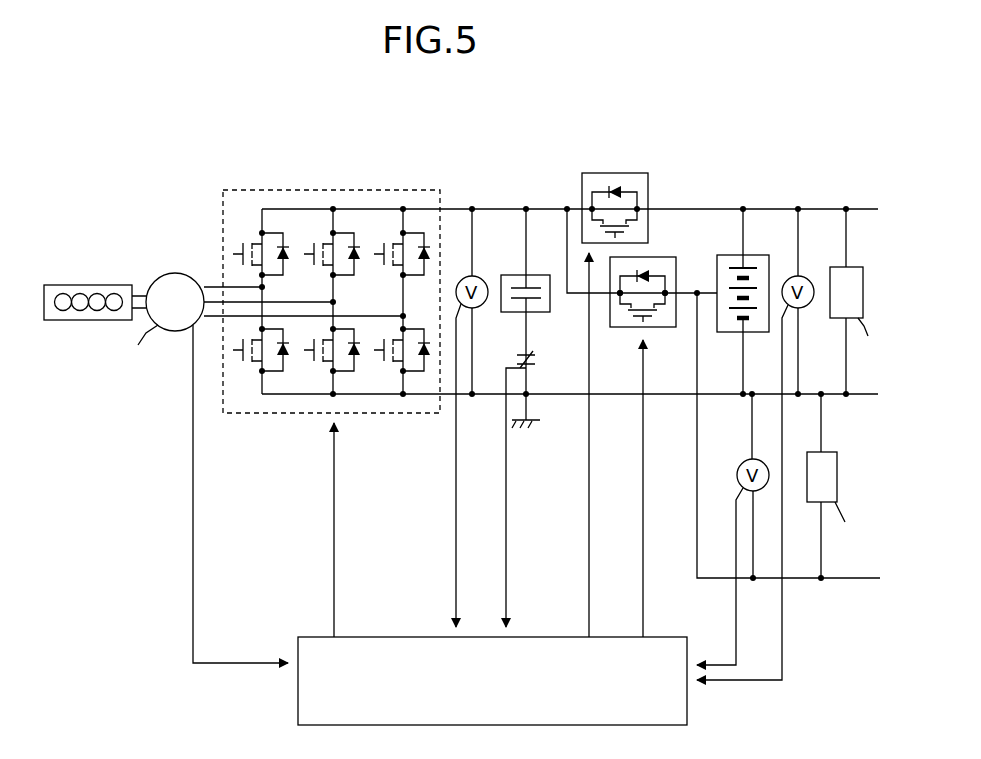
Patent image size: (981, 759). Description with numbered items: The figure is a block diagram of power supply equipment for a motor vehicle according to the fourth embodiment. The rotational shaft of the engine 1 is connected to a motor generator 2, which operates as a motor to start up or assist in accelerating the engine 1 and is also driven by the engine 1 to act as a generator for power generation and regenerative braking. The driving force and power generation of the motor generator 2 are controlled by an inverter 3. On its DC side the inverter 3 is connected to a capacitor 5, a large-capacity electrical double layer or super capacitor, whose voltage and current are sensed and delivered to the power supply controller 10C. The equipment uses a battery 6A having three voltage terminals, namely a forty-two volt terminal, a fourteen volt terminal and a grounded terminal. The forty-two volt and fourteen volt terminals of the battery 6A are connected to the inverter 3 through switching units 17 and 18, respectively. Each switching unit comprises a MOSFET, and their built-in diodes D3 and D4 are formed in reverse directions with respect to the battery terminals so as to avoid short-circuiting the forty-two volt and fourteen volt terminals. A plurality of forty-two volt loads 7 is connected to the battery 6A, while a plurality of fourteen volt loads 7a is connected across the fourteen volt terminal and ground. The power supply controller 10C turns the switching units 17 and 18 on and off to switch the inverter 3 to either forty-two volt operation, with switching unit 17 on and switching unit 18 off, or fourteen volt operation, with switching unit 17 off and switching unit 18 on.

The engine 1 is at (97, 270).
The motor generator 2 is at (134, 298).
The inverter 3 is at (331, 280).
The capacitor 5 is at (532, 301).
The switching unit 17 is at (637, 197).
The switching unit 18 is at (665, 282).
The battery 6A is at (758, 301).
The 42-V loads 7 is at (867, 301).
The 14-V loads 7a is at (844, 486).
The power supply controller 10C is at (510, 658).
The built-in diode D3 is at (638, 150).
The built-in diode D4 is at (669, 235).